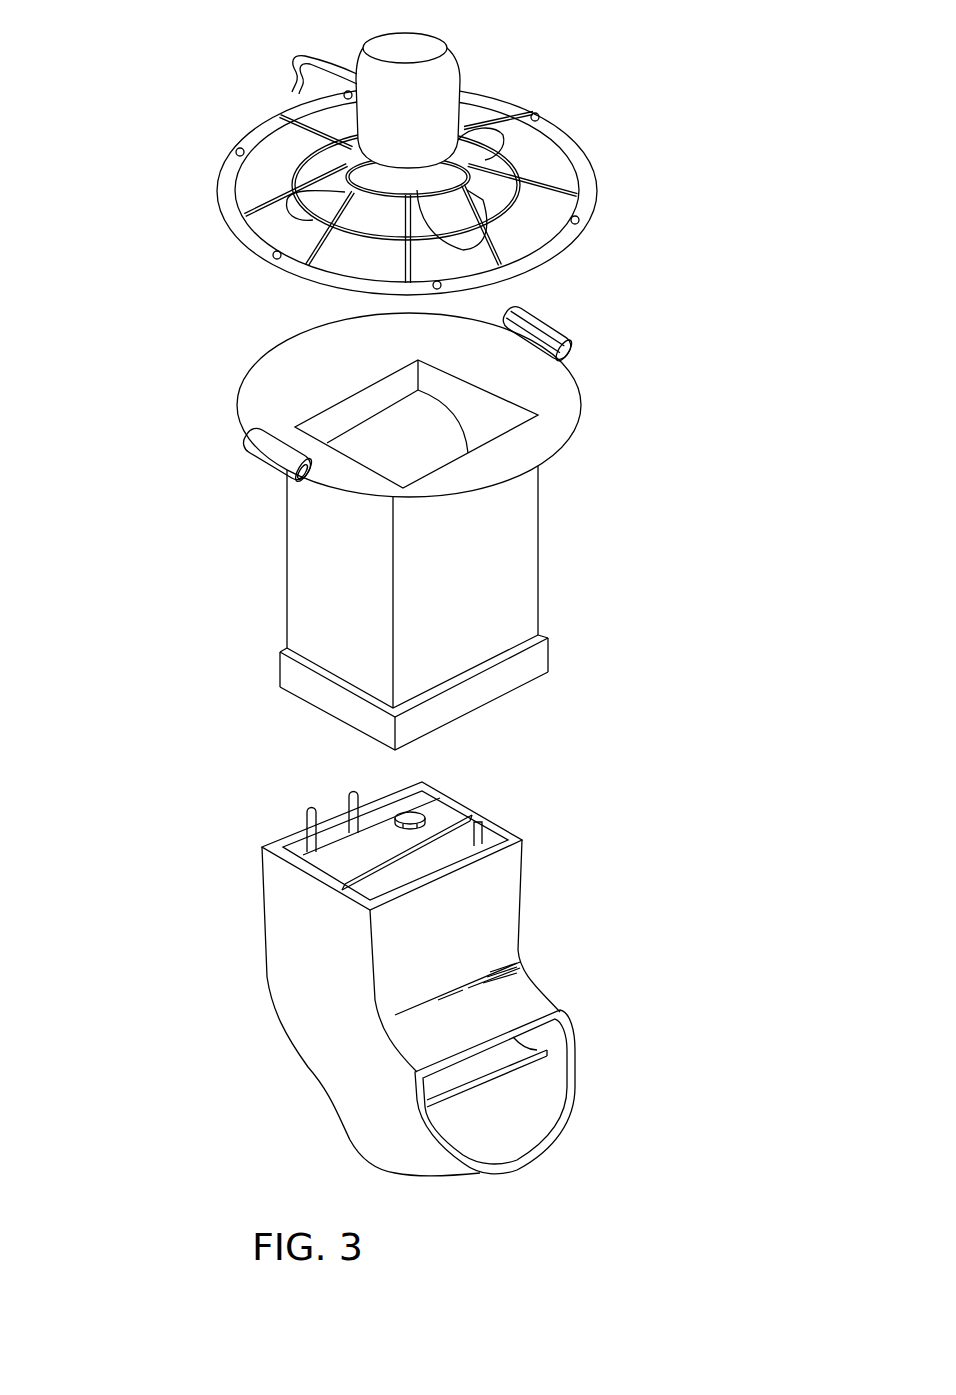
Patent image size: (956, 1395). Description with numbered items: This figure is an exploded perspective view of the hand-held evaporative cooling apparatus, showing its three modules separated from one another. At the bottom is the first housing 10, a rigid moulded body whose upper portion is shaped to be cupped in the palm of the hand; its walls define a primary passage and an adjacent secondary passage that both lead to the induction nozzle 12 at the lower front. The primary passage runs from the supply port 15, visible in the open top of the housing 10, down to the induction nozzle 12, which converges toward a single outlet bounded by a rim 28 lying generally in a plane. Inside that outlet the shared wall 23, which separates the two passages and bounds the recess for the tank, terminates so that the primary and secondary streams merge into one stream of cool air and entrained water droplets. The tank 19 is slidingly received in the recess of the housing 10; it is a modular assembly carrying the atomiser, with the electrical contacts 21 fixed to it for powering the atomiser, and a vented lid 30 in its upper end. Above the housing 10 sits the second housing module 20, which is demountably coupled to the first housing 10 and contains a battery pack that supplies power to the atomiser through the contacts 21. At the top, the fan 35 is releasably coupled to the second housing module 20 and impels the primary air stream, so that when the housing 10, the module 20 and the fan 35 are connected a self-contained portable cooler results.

The first housing 10 is at (376, 967).
The induction nozzle 12 is at (543, 1078).
The supply port 15 is at (483, 838).
The tank 19 is at (340, 860).
The second housing module 20 is at (240, 525).
The electrical contacts 21 is at (353, 792).
The shared wall 23 is at (472, 1068).
The rim 28 is at (562, 1133).
The vented lid 30 is at (415, 812).
The fan 35 is at (190, 230).